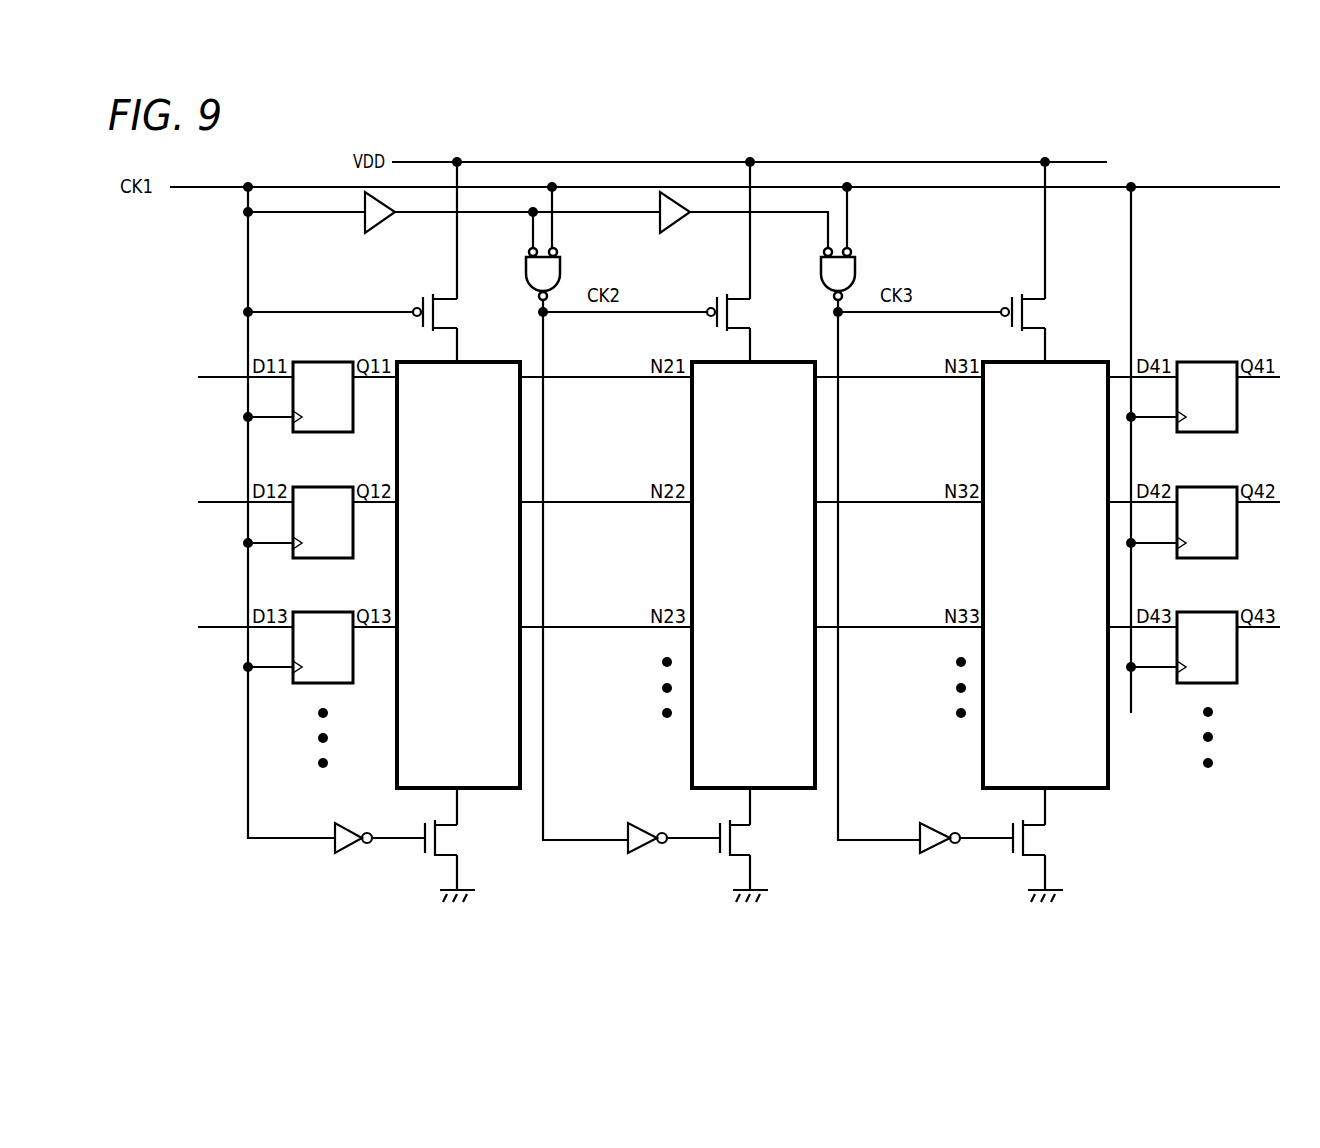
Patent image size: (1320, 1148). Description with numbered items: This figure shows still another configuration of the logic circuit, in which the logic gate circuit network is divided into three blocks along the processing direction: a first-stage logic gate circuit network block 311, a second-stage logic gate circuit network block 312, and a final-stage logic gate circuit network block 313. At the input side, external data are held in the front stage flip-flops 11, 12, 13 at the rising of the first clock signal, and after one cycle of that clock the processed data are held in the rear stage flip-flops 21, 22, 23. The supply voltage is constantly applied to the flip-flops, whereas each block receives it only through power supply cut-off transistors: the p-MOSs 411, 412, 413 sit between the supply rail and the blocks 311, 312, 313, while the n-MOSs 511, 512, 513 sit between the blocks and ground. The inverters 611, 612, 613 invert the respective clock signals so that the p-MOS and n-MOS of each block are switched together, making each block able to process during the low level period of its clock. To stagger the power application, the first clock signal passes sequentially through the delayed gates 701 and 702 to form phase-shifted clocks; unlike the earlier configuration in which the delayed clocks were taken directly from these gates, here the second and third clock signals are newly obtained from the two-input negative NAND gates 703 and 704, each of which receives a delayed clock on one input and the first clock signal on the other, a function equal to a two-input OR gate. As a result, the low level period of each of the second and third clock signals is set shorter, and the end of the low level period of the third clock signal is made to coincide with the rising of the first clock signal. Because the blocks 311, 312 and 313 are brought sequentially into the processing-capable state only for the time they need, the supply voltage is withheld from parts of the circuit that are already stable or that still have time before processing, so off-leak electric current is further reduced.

The front stage flip-flop 11 is at (303, 362).
The front stage flip-flop 12 is at (303, 487).
The front stage flip-flop 13 is at (303, 612).
The rear stage flip-flop 21 is at (1187, 362).
The rear stage flip-flop 22 is at (1187, 487).
The rear stage flip-flop 23 is at (1187, 612).
The logic gate circuit network block 311 is at (485, 790).
The logic gate circuit network block 312 is at (773, 790).
The logic gate circuit network block 313 is at (1065, 790).
The p-MOS 411 is at (413, 297).
The p-MOS 412 is at (708, 297).
The p-MOS 413 is at (1003, 297).
The n-MOS 511 is at (420, 822).
The n-MOS 512 is at (715, 822).
The n-MOS 513 is at (1008, 822).
The inverter 611 is at (345, 856).
The inverter 612 is at (640, 856).
The inverter 613 is at (932, 856).
The delayed gate 701 is at (383, 232).
The delayed gate 702 is at (678, 232).
The 2-input negative NAND gate 703 is at (523, 271).
The 2-input negative NAND gate 704 is at (818, 271).